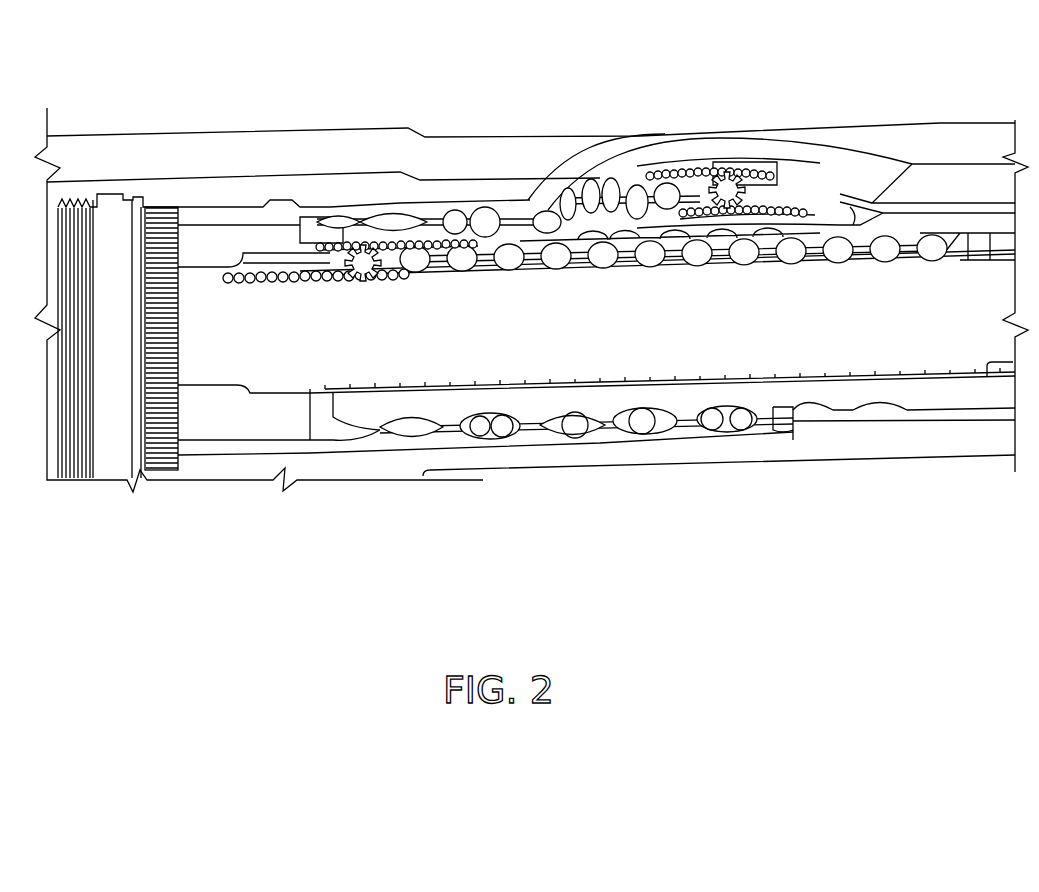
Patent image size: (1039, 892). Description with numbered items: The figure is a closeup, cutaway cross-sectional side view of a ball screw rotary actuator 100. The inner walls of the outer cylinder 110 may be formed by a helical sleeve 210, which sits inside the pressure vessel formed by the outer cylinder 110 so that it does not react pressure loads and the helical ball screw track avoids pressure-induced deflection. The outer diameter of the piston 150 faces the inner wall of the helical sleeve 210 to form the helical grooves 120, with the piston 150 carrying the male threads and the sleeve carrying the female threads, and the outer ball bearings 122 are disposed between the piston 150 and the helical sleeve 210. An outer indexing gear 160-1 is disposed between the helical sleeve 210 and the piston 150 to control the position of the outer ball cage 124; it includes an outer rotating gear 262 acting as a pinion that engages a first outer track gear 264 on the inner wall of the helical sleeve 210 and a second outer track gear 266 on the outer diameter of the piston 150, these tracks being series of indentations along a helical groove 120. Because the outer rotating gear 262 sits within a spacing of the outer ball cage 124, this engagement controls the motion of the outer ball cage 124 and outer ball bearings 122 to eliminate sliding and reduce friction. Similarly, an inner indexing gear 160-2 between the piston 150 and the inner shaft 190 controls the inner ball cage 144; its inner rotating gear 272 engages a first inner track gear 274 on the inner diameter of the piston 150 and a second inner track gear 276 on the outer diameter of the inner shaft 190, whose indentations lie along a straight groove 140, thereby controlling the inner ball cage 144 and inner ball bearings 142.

The ball screw rotary actuator 100 is at (674, 554).
The outer cylinder 110 is at (834, 441).
The helical grooves 120 is at (570, 198).
The outer ball bearings 122 is at (648, 190).
The outer ball cage 124 is at (512, 220).
The straight groove 140 is at (532, 262).
The inner ball bearings 142 is at (650, 264).
The inner ball cage 144 is at (485, 248).
The piston 150 is at (921, 395).
The outer indexing gear 160-1 is at (722, 158).
The inner indexing gear 160-2 is at (352, 279).
The inner shaft 190 is at (937, 338).
The helical sleeve 210 is at (233, 412).
The outer rotating gear 262 is at (785, 158).
The first outer track gear 264 is at (702, 158).
The second outer track gear 266 is at (807, 201).
The inner rotating gear 272 is at (366, 277).
The first inner track gear 274 is at (338, 248).
The second inner track gear 276 is at (392, 284).